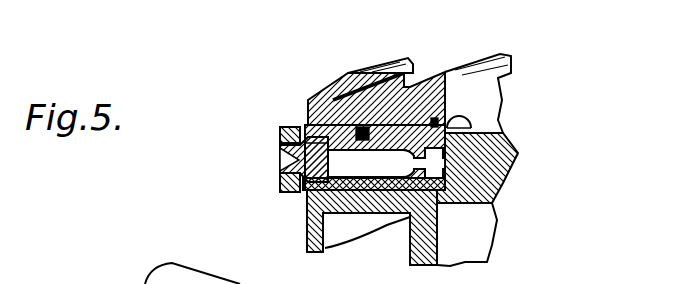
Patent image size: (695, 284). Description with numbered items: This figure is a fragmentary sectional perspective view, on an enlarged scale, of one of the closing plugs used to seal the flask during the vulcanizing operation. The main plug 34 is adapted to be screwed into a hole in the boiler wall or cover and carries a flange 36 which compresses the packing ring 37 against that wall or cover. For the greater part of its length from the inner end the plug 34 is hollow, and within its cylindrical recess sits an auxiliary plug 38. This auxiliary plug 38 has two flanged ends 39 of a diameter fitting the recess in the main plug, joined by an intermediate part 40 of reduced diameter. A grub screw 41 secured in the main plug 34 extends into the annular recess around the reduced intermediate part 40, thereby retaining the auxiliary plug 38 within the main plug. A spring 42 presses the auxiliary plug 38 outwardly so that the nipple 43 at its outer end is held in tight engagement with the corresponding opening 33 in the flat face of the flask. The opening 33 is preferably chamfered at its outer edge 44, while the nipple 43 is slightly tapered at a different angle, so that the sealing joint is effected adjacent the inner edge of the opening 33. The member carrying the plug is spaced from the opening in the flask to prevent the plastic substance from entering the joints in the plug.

The opening 33 is at (280, 142).
The plug 34 is at (497, 179).
The flange 36 is at (470, 120).
The packing ring 37 is at (435, 123).
The auxiliary plug 38 is at (310, 150).
The flanged end 39 is at (313, 178).
The intermediate part 40 is at (347, 192).
The grub screw 41 is at (367, 133).
The spring 42 is at (470, 203).
The nipple 43 is at (278, 168).
The outer edge 44 is at (278, 128).